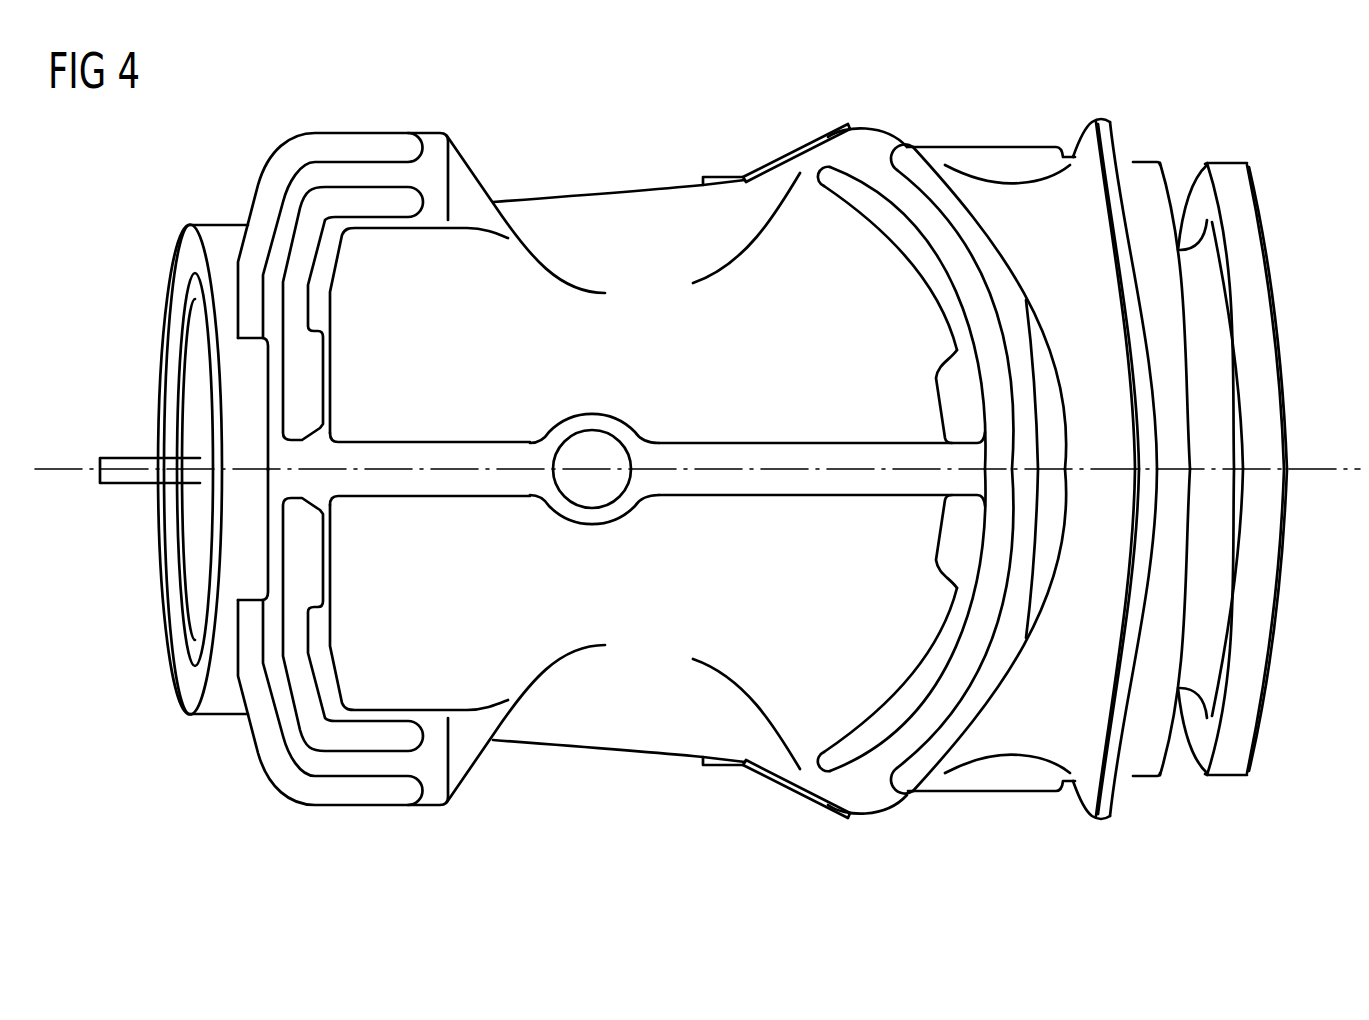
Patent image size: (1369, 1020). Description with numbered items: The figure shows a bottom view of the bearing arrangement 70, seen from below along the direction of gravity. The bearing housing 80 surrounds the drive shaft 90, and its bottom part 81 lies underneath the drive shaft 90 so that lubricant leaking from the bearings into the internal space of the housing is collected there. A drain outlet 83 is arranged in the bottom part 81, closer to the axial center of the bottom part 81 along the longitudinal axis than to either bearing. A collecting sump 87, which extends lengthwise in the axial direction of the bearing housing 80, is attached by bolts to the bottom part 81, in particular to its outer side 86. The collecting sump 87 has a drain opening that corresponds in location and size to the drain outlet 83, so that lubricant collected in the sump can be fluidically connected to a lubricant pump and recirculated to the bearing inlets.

The bearing arrangement 70 is at (687, 166).
The bearing housing 80 is at (990, 157).
The bottom part 81 is at (421, 515).
The drain outlet 83 is at (587, 440).
The outer side 86 is at (451, 567).
The collecting sump 87 is at (685, 520).
The drive shaft 90 is at (1232, 172).